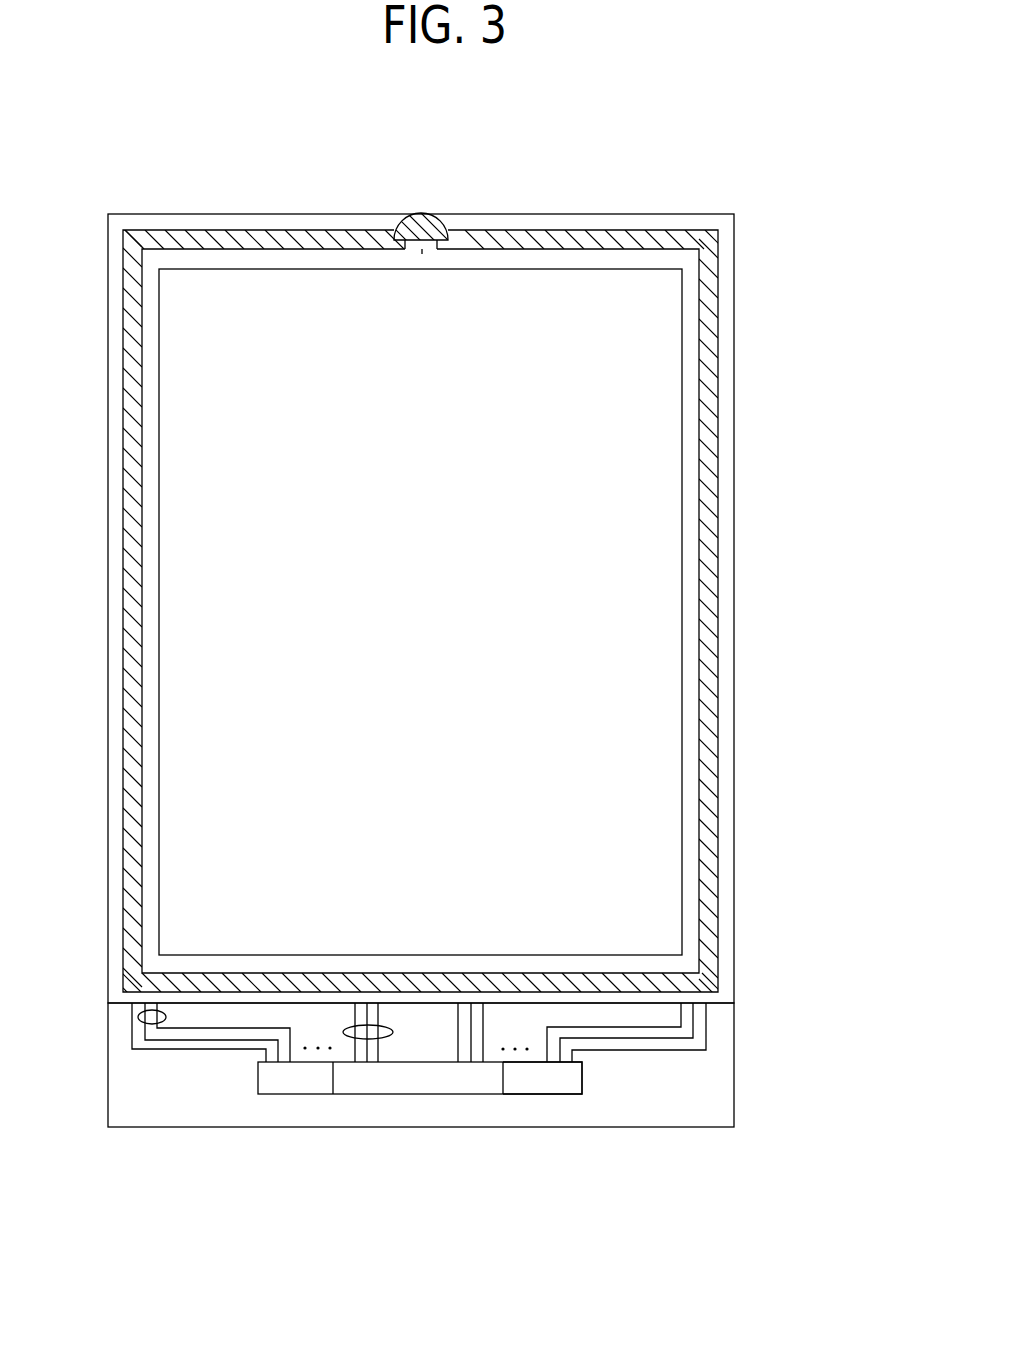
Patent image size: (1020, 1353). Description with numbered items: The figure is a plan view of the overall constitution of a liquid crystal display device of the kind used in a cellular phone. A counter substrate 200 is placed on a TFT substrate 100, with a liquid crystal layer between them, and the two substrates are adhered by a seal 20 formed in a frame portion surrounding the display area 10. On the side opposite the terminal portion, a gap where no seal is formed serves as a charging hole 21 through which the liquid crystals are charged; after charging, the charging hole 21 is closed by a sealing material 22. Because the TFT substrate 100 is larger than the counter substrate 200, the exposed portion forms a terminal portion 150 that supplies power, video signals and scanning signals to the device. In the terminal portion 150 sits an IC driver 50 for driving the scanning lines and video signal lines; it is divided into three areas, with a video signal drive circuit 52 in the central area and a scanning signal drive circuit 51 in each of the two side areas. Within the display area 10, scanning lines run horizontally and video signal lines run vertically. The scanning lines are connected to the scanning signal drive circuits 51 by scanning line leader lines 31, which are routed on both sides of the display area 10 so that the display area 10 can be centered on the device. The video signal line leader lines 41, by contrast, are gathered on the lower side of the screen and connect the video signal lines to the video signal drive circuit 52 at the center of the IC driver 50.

The display area 10 is at (682, 428).
The seal 20 is at (718, 778).
The counter substrate 200 is at (734, 579).
The TFT substrate 100 is at (734, 1107).
The terminal portion 150 is at (713, 1070).
The charging hole 21 is at (413, 216).
The sealing material 22 is at (428, 214).
The scanning line leader lines 31 is at (140, 1022).
The video signal line leader lines 41 is at (385, 1040).
The IC driver 50 is at (495, 1095).
The scanning signal drive circuit 51 is at (558, 1083).
The video signal drive circuit 52 is at (433, 1080).